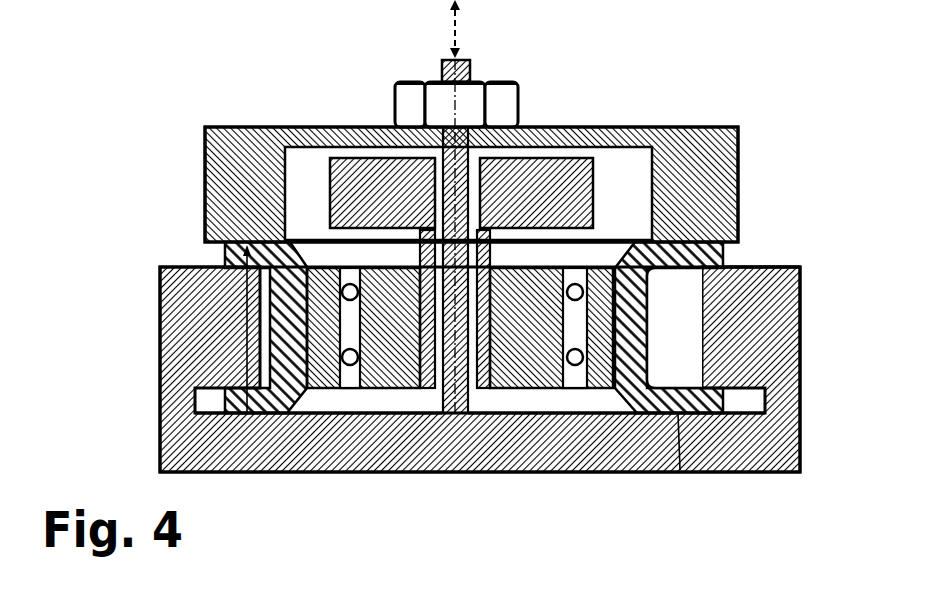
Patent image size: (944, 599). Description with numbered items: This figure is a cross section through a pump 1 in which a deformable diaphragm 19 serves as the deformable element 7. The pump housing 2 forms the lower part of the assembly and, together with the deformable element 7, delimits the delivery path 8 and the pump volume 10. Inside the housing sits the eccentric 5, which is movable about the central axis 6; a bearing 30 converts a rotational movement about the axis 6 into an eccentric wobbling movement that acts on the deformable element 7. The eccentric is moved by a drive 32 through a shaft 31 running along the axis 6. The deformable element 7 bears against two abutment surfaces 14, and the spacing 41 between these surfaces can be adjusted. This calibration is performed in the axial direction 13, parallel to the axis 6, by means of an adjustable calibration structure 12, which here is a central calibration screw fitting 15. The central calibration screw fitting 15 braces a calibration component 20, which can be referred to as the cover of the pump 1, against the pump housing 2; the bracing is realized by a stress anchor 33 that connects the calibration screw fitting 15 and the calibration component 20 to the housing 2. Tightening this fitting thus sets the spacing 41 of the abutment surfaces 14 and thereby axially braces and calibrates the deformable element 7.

The pump 1 is at (163, 127).
The pump housing 2 is at (160, 320).
The eccentric 5 is at (365, 392).
The axis 6 is at (457, 413).
The deformable element 7 is at (307, 415).
The delivery path 8 is at (727, 263).
The pump volume 10 is at (703, 310).
The adjustable calibration structure 12 is at (497, 82).
The axial direction 13 is at (450, 18).
The abutment surfaces 14 is at (728, 247).
The central calibration screw fitting 15 is at (517, 83).
The deformable diaphragm 19 is at (680, 470).
The calibration component 20 is at (738, 170).
The bearing 30 is at (555, 388).
The shaft 31 is at (417, 252).
The drive 32 is at (583, 157).
The stress anchor 33 is at (470, 60).
The spacing 41 is at (247, 368).